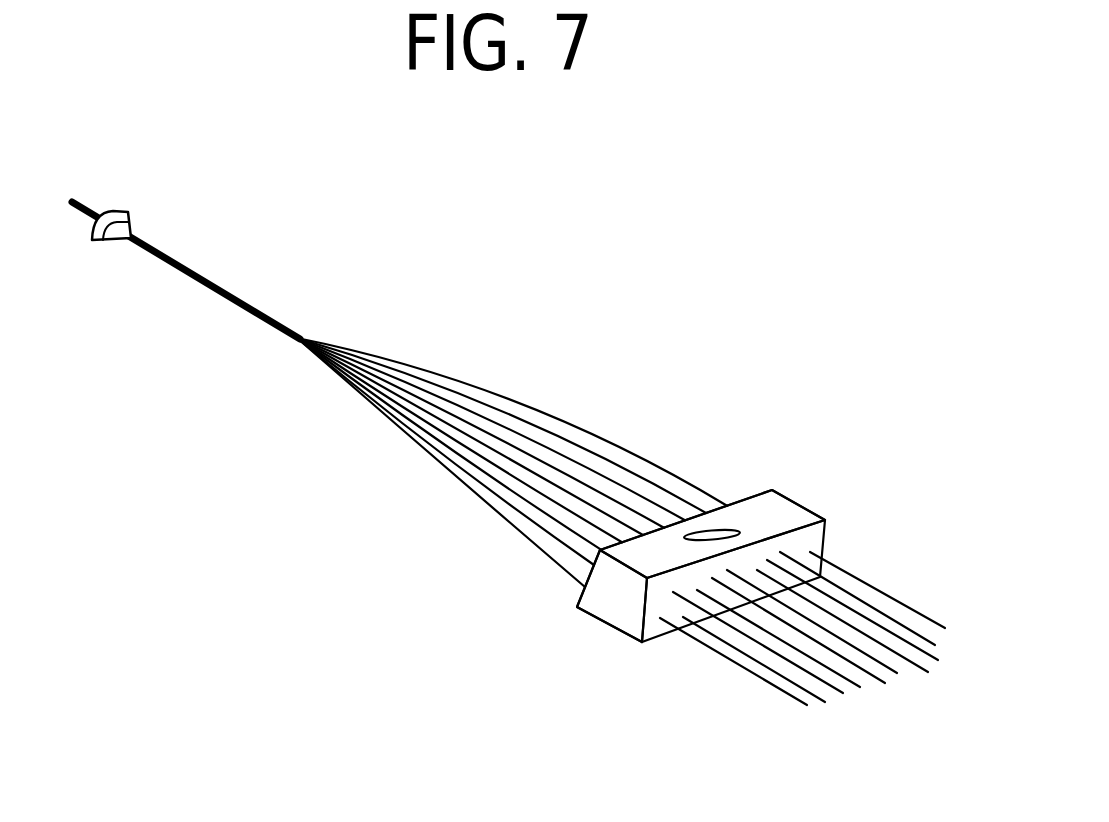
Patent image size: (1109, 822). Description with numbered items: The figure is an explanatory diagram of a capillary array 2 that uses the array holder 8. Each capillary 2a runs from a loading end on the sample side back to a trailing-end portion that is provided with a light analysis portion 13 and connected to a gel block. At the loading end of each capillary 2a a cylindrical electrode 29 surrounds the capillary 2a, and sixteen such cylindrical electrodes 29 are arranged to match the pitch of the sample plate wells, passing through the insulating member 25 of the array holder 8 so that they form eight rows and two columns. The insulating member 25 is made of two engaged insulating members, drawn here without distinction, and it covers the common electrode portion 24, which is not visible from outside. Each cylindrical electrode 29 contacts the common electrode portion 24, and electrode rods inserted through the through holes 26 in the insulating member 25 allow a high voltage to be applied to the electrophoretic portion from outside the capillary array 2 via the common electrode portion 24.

The capillary array 2 is at (287, 333).
The capillary 2a is at (547, 412).
The light analysis portion 13 is at (102, 238).
The array holder 8 is at (623, 634).
The common electrode portion 24 is at (727, 540).
The insulating member 25 is at (613, 602).
The through hole 26 is at (715, 550).
The cylindrical electrode 29 is at (858, 576).